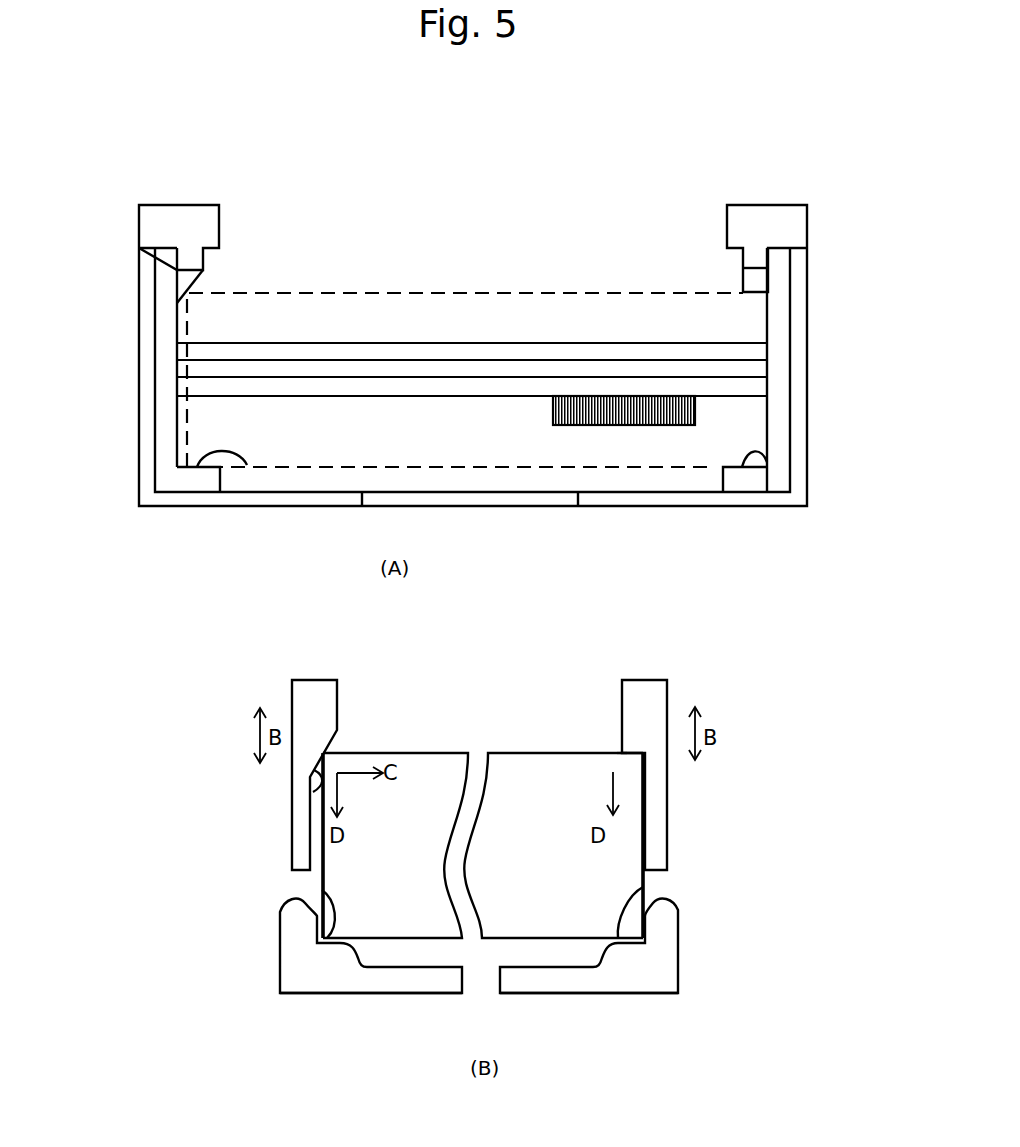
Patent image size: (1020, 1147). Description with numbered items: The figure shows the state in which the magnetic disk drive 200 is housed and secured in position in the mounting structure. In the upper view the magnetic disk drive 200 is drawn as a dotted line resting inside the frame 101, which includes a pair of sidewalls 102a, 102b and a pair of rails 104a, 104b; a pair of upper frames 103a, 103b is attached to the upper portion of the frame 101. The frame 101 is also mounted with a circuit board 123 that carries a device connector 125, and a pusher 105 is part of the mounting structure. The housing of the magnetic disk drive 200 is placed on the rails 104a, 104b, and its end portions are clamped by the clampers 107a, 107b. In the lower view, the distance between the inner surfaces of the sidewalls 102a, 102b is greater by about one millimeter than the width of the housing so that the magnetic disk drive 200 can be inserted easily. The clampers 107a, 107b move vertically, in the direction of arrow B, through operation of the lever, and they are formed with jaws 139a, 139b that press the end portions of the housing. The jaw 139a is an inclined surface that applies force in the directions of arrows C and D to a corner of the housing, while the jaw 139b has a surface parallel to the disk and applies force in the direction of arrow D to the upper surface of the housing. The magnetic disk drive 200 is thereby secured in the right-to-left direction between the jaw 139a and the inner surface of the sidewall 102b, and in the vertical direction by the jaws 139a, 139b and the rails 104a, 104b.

The frame 101 is at (543, 993).
The sidewall 102a is at (139, 414).
The sidewall 102b is at (808, 398).
The upper frame 103a is at (139, 223).
The upper frame 103b is at (807, 232).
The rail 104a is at (247, 465).
The rail 104b is at (766, 462).
The pusher 105 is at (417, 343).
The clamper 107a is at (212, 268).
The clamper 107b is at (760, 280).
The circuit board 123 is at (330, 397).
The device connector 125 is at (566, 426).
The jaw 139a is at (313, 777).
The jaw 139b is at (622, 755).
The magnetic disk drive 200 is at (340, 290).